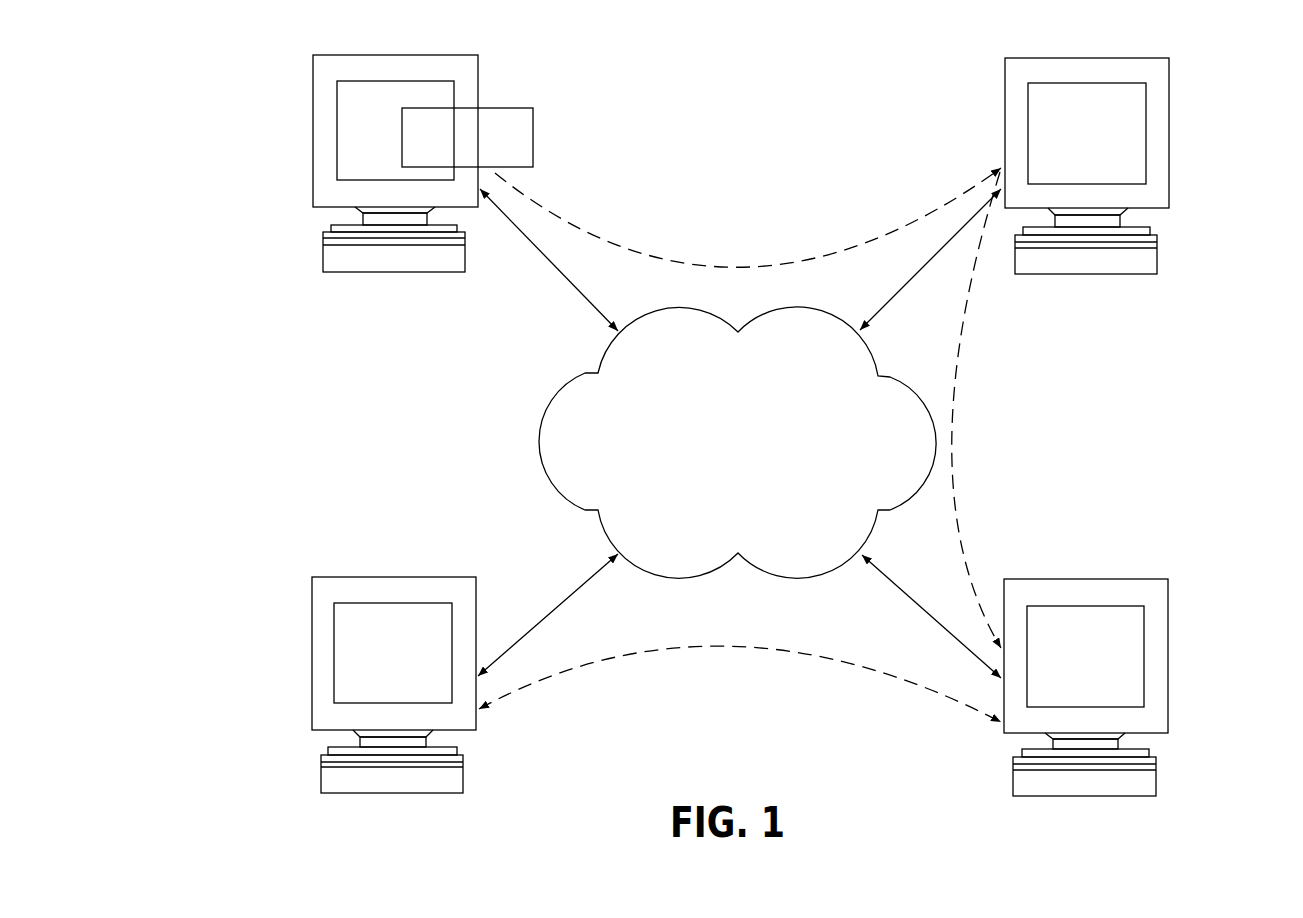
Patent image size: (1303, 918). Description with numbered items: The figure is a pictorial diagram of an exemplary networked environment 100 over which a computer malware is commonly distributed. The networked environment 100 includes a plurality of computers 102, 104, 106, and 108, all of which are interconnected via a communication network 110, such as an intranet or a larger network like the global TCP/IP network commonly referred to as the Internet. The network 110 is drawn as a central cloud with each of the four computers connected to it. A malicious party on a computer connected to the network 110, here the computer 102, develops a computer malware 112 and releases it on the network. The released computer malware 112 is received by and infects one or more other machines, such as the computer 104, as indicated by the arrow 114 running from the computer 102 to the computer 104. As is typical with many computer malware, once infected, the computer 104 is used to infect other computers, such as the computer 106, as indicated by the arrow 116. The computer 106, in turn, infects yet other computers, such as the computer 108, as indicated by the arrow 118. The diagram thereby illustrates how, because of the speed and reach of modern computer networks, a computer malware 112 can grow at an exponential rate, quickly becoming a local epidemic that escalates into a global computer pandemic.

The networked environment 100 is at (746, 99).
The computer 102 is at (313, 127).
The computer 104 is at (1169, 132).
The computer 106 is at (1168, 653).
The computer 108 is at (312, 650).
The communication network 110 is at (540, 440).
The computer malware 112 is at (533, 137).
The arrow 114 is at (757, 267).
The arrow 116 is at (953, 447).
The arrow 118 is at (737, 648).